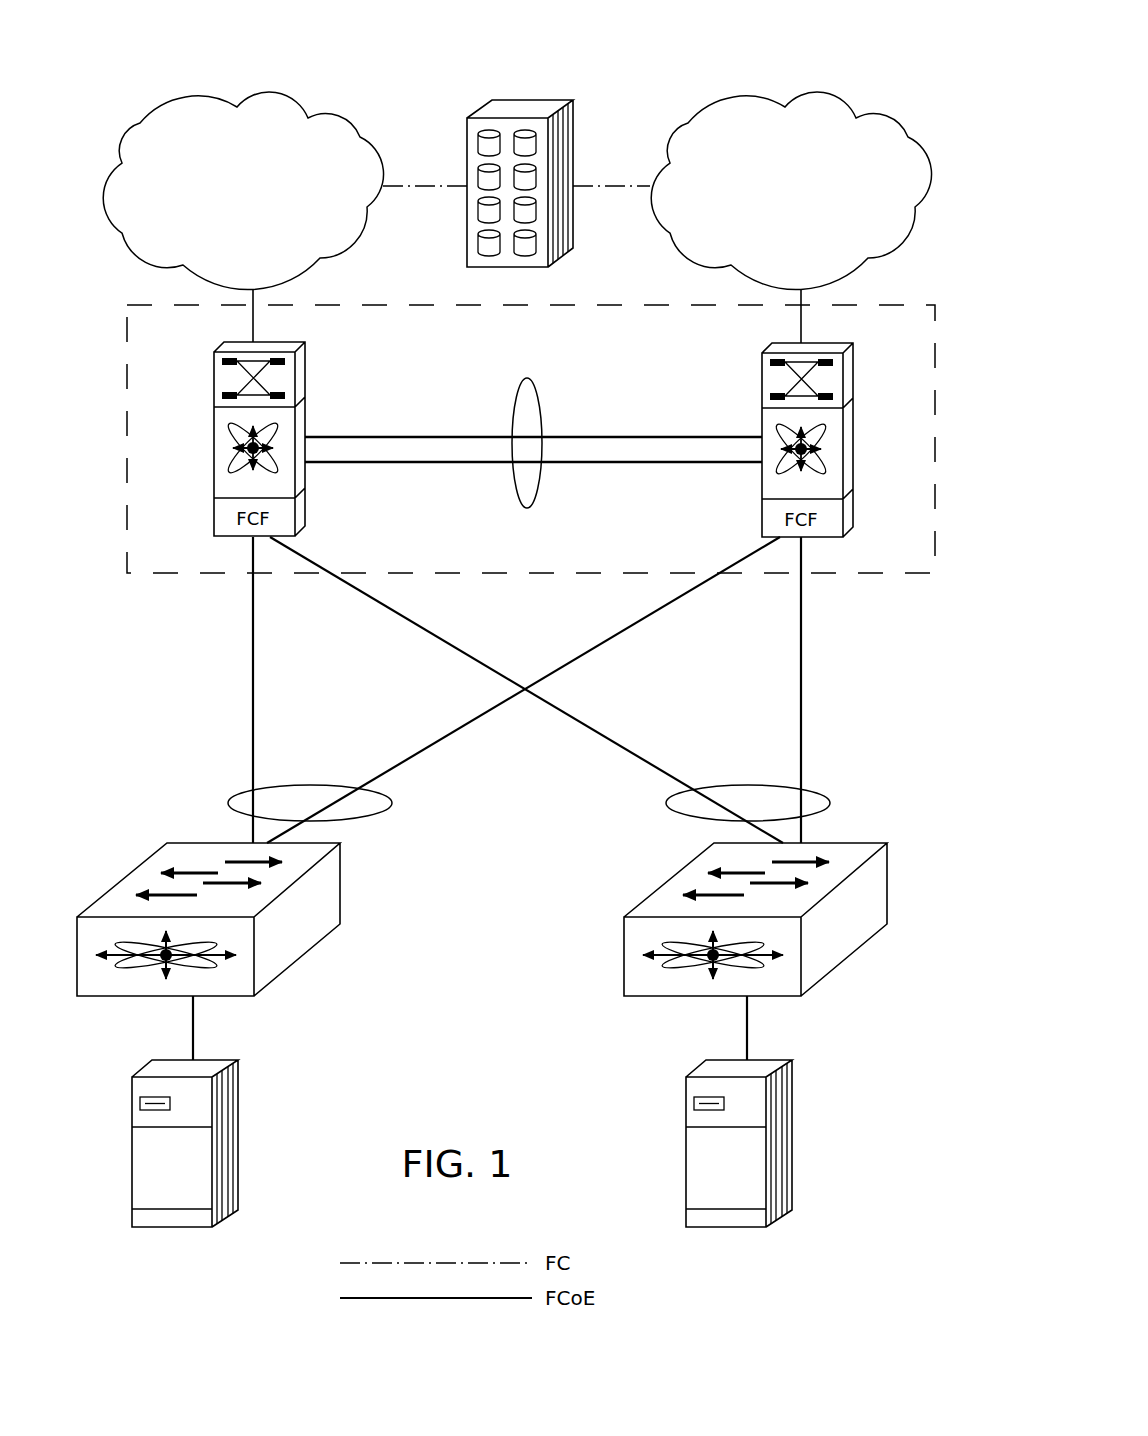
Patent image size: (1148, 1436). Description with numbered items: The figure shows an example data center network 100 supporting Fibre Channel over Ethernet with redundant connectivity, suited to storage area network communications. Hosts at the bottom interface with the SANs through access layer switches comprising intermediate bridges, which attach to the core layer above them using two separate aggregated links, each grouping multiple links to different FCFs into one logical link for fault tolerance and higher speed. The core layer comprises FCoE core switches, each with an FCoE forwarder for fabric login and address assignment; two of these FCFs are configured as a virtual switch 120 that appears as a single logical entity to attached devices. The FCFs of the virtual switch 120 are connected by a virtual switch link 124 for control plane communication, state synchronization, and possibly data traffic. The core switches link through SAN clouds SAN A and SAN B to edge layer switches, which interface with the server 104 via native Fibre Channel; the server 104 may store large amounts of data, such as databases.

The data center network 100 is at (418, 94).
The server 104 is at (573, 131).
The virtual switch 120 is at (560, 305).
The virtual switch link 124 is at (527, 378).